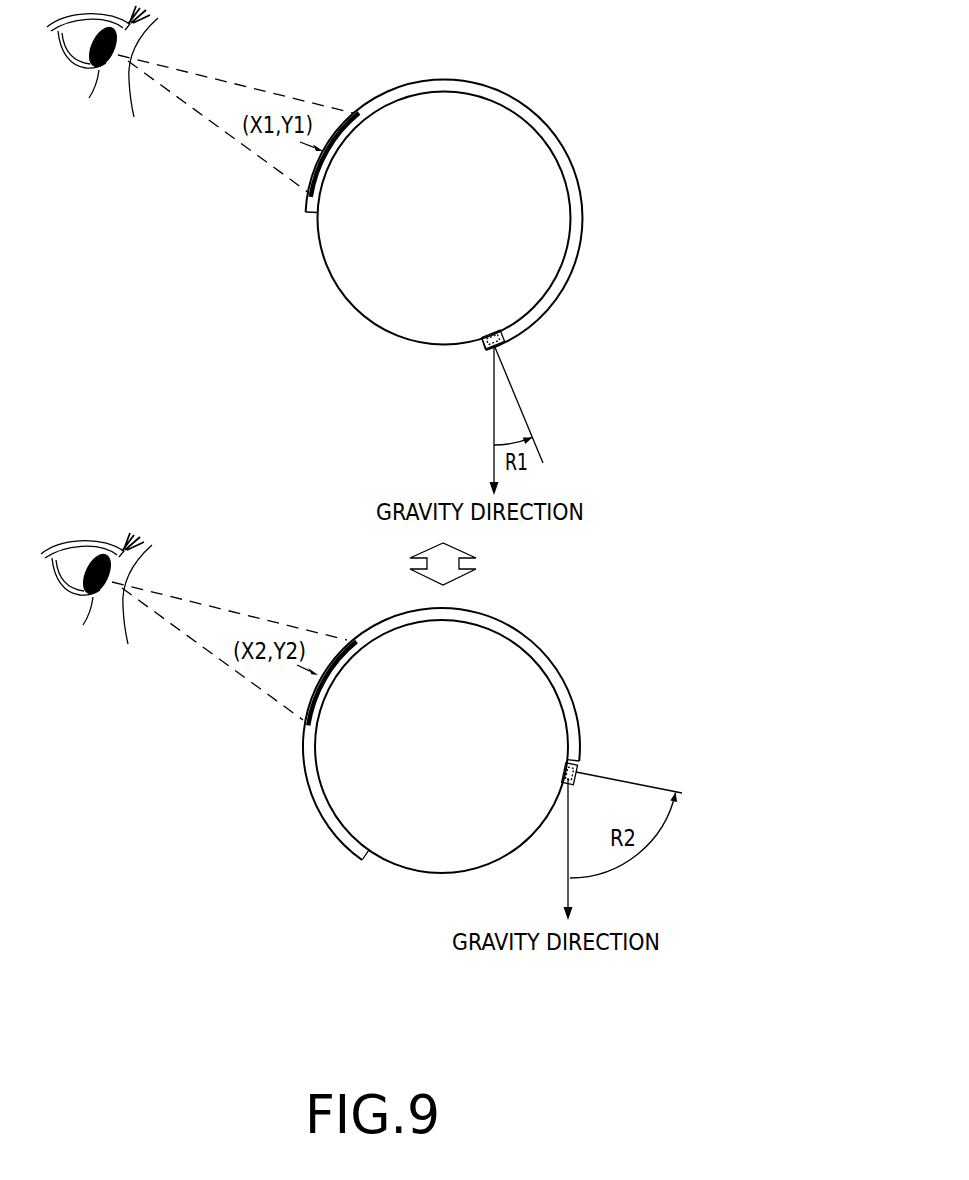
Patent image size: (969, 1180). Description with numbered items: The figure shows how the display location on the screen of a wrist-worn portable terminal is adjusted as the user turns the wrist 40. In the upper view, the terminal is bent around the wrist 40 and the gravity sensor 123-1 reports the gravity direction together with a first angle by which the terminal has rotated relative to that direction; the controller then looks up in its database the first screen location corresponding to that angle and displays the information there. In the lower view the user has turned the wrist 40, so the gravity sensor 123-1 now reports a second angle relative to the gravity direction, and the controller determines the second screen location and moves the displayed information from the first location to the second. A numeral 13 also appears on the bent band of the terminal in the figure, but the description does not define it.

The rotatable bezel ring 13 is at (563, 143).
The wrist 40 is at (345, 242).
The gravity sensor 123-1 is at (485, 345).